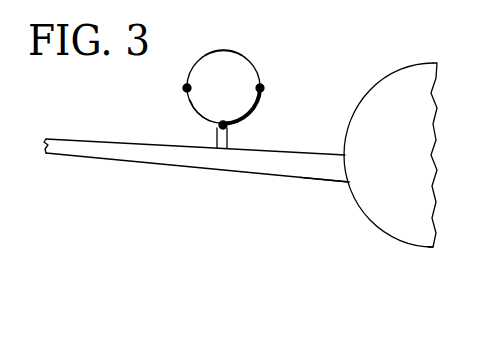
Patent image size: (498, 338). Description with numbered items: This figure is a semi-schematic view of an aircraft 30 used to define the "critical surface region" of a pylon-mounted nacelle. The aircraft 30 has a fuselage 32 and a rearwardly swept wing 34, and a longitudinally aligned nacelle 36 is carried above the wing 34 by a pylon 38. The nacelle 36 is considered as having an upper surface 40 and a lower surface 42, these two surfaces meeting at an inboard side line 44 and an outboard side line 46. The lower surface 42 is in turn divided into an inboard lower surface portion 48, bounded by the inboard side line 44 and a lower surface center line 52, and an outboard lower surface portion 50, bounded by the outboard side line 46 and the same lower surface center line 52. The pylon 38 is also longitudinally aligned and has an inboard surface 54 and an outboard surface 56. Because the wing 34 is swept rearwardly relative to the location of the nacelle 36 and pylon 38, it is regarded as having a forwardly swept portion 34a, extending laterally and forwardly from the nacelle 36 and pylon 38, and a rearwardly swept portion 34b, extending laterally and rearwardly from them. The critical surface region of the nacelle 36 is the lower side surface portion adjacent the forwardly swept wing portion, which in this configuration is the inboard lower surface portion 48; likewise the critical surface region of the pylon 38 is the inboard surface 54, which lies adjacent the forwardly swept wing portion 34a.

The aircraft 30 is at (345, 50).
The fuselage 32 is at (422, 74).
The rearwardly swept wing 34 is at (283, 160).
The forwardly swept portion 34a is at (318, 173).
The rearwardly swept portion 34b is at (92, 157).
The nacelle 36 is at (255, 63).
The pylon 38 is at (213, 135).
The upper surface 40 is at (220, 50).
The lower surface 42 is at (211, 128).
The inboard side line 44 is at (264, 88).
The outboard side line 46 is at (185, 88).
The inboard lower surface portion 48 is at (262, 103).
The outboard lower surface portion 50 is at (196, 112).
The lower surface center line 52 is at (222, 121).
The inboard surface 54 is at (228, 133).
The outboard surface 56 is at (207, 131).